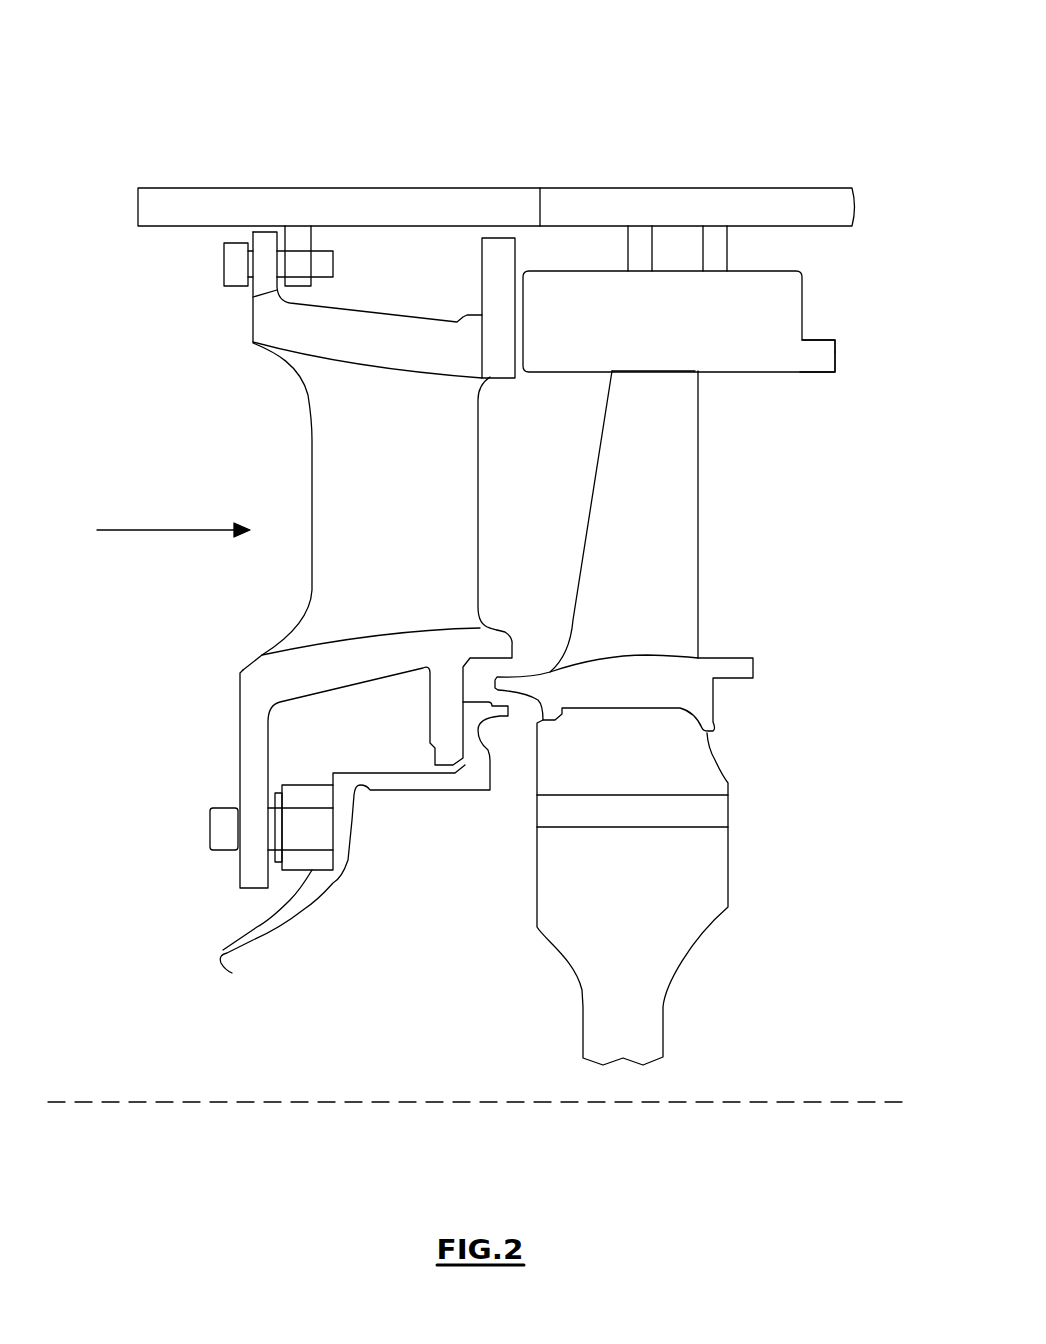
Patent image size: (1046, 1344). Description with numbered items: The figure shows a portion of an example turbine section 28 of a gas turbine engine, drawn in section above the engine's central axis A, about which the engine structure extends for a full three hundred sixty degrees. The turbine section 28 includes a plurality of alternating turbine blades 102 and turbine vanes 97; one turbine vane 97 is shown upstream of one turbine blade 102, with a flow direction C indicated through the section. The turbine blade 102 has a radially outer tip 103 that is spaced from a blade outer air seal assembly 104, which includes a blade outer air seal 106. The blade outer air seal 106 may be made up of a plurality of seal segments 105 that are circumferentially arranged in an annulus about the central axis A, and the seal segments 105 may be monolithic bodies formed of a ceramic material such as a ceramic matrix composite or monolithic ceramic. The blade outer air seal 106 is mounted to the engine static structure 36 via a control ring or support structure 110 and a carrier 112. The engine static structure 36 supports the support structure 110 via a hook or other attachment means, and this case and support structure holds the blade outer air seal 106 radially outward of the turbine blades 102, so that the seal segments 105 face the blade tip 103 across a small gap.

The turbine section 28 is at (773, 82).
The engine static structure 36 is at (203, 208).
The turbine vane 97 is at (483, 350).
The turbine blade 102 is at (683, 490).
The radially outer tip 103 is at (678, 371).
The blade outer air seal assembly 104 is at (846, 296).
The seal segment 105 is at (822, 348).
The blade outer air seal 106 is at (820, 360).
The support structure 110 is at (585, 202).
The carrier 112 is at (640, 248).
The core flow path direction C is at (127, 530).
The central axis A is at (853, 1102).